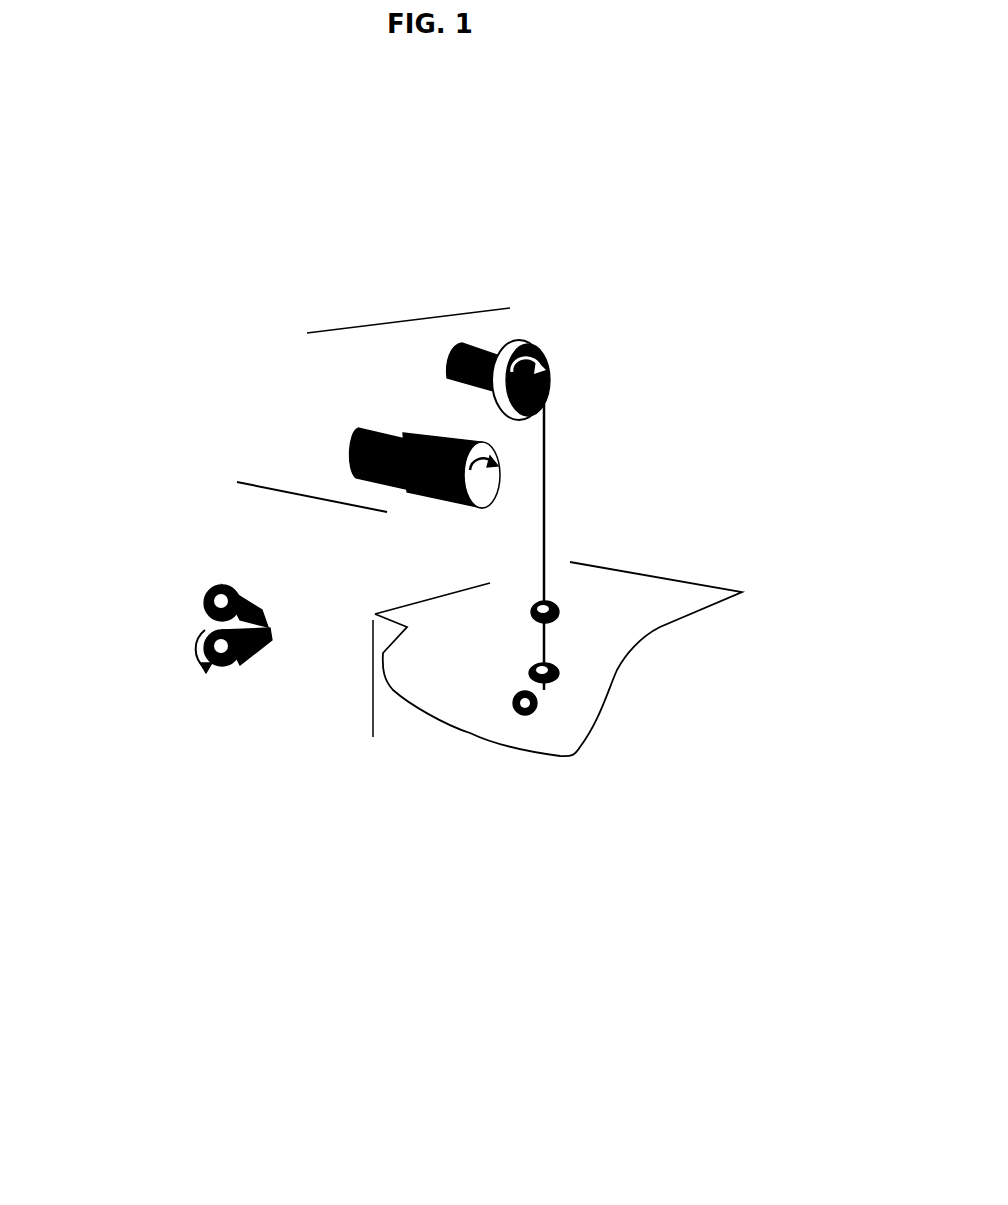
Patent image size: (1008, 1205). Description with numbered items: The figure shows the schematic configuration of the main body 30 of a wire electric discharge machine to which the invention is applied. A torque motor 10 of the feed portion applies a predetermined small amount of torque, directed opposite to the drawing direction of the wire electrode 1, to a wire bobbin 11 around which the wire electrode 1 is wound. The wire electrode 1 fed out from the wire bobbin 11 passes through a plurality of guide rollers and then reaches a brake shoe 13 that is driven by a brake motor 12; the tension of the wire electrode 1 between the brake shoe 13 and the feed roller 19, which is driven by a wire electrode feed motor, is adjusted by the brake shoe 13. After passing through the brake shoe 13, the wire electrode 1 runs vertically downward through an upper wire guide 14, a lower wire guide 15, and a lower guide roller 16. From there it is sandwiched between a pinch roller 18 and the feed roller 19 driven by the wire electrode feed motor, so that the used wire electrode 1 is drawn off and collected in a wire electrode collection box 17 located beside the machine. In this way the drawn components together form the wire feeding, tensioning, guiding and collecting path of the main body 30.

The wire electrode 1 is at (543, 540).
The torque motor 10 is at (375, 428).
The wire bobbin 11 is at (432, 440).
The brake motor 12 is at (470, 352).
The brake shoe 13 is at (515, 358).
The upper wire guide 14 is at (557, 616).
The lower wire guide 15 is at (547, 686).
The lower guide roller 16 is at (528, 714).
The wire electrode collection box 17 is at (108, 678).
The pinch roller 18 is at (220, 592).
The feed roller 19 is at (238, 655).
The main body 30 is at (681, 322).